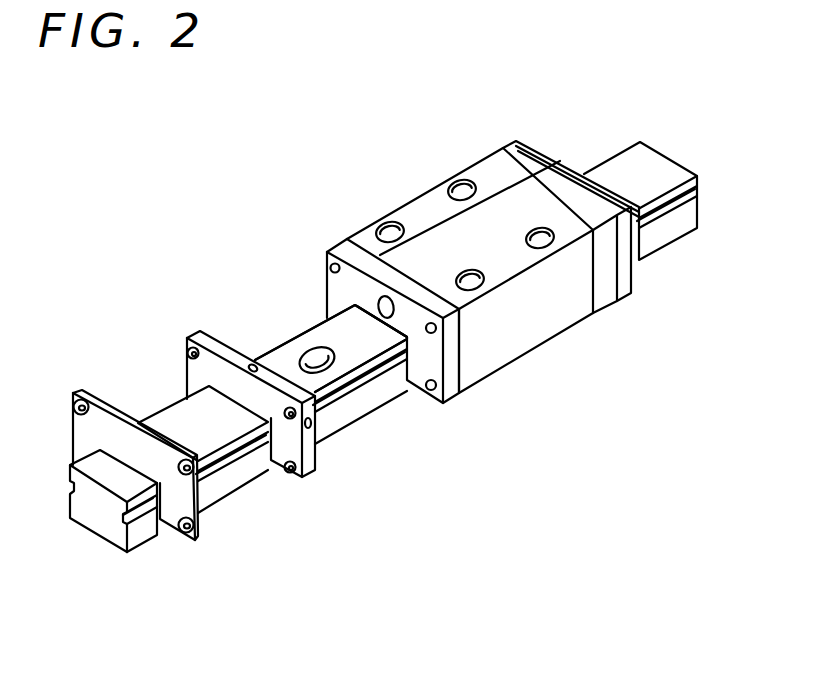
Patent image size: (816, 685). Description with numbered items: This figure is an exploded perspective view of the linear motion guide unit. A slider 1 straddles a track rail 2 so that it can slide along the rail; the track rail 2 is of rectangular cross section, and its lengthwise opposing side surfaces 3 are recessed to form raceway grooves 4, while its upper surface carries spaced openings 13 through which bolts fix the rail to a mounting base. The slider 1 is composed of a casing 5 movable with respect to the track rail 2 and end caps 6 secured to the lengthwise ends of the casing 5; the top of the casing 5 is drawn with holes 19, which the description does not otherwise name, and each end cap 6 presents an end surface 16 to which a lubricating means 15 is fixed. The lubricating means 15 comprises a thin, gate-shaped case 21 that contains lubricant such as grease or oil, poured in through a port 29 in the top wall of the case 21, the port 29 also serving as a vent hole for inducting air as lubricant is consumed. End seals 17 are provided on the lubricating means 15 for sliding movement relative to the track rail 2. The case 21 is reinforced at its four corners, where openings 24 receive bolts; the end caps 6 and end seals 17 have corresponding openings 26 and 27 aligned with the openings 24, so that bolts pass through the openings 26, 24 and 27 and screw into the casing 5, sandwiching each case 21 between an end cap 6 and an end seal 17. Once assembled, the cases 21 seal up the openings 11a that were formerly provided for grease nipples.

The slider 1 is at (549, 347).
The track rail 2 is at (285, 354).
The lengthwise side surfaces 3 is at (68, 485).
The raceway grooves 4 is at (133, 517).
The casing 5 is at (424, 203).
The end caps 6 is at (330, 249).
The openings for grease nipples 11a is at (384, 296).
The openings 13 is at (316, 358).
The lubricating means 15 is at (307, 486).
The end surfaces 16 is at (422, 358).
The end seals 17 is at (110, 427).
The threaded hole 19 is at (387, 226).
The case 21 is at (214, 342).
The openings 24 is at (190, 348).
The openings 26 is at (330, 265).
The openings 27 is at (75, 396).
The port 29 is at (252, 364).